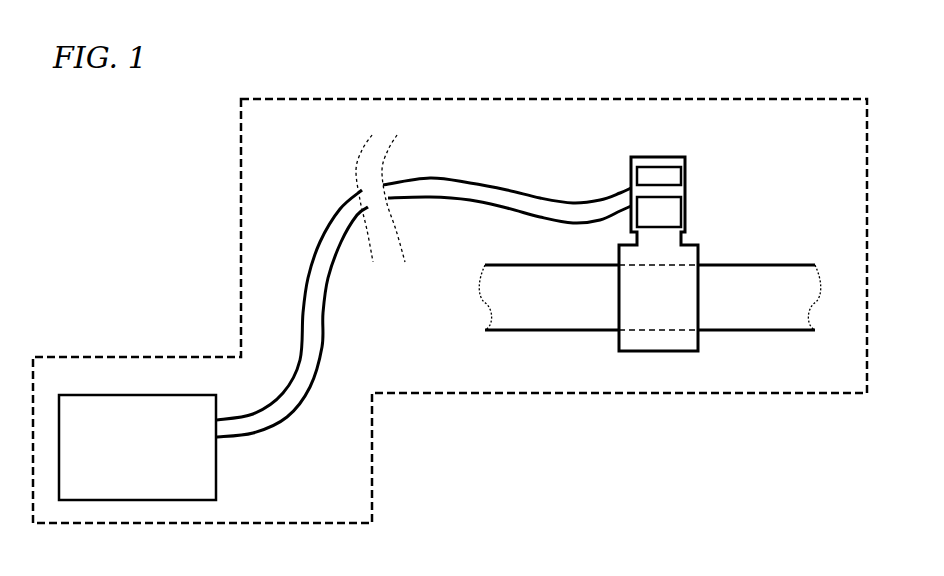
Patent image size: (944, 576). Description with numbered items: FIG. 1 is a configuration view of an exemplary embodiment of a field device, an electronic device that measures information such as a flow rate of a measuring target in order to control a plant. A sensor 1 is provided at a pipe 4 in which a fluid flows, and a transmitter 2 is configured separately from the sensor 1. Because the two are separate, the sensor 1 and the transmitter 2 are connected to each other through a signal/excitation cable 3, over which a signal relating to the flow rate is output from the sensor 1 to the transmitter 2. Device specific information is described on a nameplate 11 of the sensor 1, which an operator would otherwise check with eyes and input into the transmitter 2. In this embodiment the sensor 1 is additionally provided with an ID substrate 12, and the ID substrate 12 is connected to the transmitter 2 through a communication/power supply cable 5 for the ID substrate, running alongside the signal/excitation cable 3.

The sensor 1 is at (683, 239).
The transmitter 2 is at (95, 391).
The signal/excitation cable 3 is at (466, 205).
The pipe 4 is at (756, 264).
The communication/power supply cable for an ID substrate 5 is at (447, 178).
The nameplate 11 is at (686, 210).
The ID substrate 12 is at (686, 177).